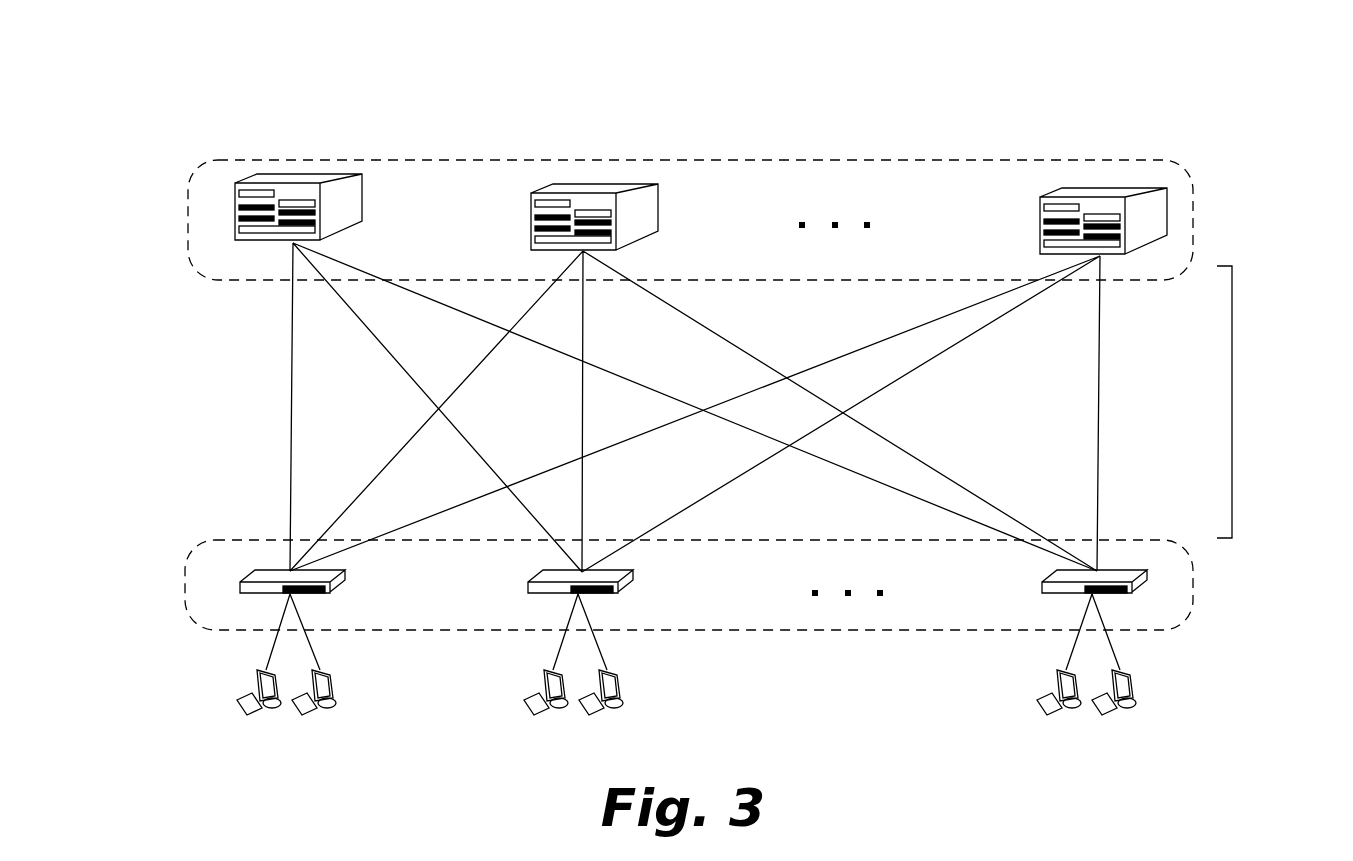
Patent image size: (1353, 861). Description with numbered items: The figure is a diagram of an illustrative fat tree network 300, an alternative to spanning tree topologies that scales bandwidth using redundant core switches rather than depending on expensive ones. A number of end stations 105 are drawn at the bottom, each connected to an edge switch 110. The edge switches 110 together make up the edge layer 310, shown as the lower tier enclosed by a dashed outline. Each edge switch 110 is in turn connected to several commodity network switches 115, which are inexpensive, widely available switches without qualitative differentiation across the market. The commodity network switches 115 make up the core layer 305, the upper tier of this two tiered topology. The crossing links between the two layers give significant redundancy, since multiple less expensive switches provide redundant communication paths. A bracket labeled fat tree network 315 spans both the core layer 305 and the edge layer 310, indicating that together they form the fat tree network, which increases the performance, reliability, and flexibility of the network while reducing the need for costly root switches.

The fat tree network 300 is at (135, 95).
The commodity network switch 115 is at (283, 183).
The core layer 305 is at (188, 218).
The edge switch 110 is at (251, 578).
The edge layer 310 is at (185, 585).
The fat tree network 315 is at (1232, 410).
The end station 105 is at (274, 710).